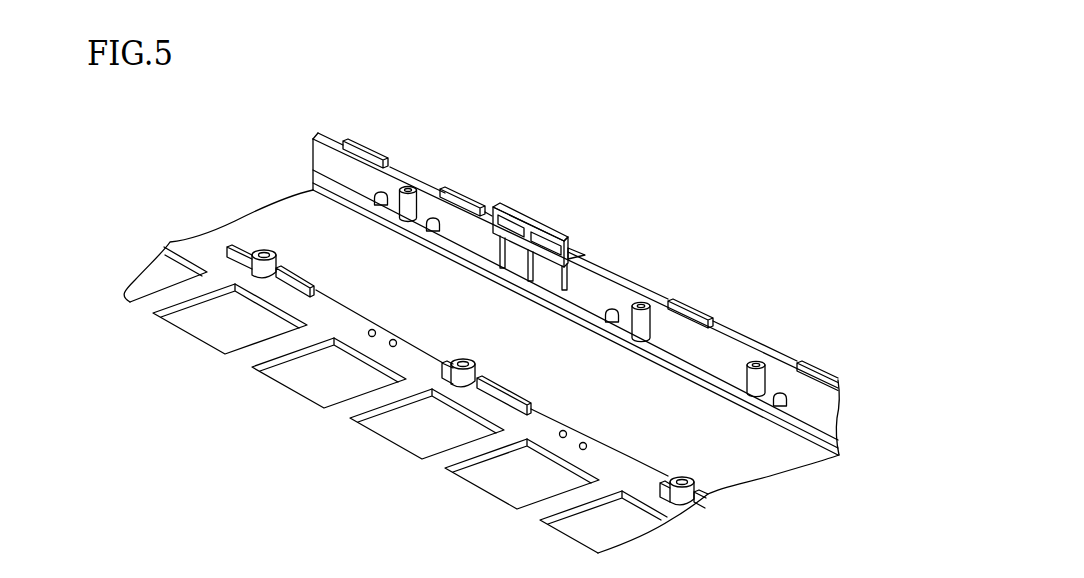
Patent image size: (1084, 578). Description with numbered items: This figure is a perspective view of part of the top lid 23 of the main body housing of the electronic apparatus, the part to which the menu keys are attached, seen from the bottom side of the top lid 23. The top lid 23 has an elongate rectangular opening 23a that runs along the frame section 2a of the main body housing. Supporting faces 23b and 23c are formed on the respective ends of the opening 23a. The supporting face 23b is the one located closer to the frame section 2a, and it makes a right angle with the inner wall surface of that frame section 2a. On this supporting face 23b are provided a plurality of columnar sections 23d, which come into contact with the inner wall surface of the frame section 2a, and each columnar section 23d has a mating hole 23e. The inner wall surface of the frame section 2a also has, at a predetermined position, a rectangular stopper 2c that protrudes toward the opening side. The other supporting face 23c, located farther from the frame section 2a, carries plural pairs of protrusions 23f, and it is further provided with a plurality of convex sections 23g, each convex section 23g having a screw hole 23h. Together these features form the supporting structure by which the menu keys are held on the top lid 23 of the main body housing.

The top lid 23 is at (839, 408).
The frame section 2a is at (313, 170).
The rectangular stopper 2c is at (532, 222).
The elongate rectangular opening 23a is at (326, 172).
The supporting face 23b is at (583, 307).
The supporting face 23c is at (413, 357).
The columnar section 23d is at (418, 200).
The mating hole 23e is at (407, 188).
The protrusion 23f is at (393, 340).
The convex section 23g is at (281, 264).
The screw hole 23h is at (262, 249).